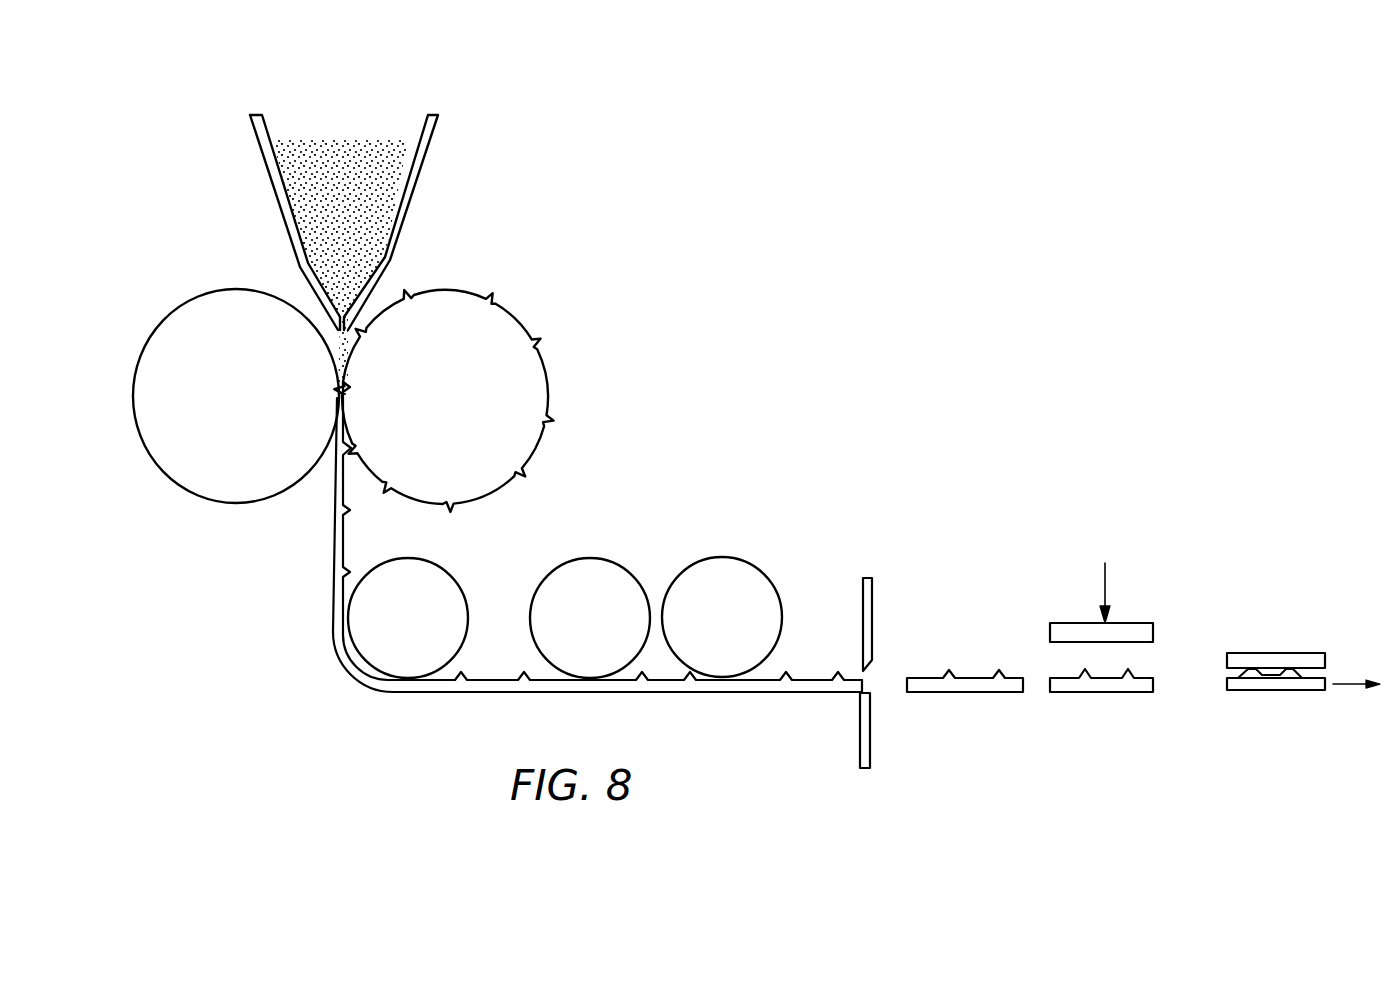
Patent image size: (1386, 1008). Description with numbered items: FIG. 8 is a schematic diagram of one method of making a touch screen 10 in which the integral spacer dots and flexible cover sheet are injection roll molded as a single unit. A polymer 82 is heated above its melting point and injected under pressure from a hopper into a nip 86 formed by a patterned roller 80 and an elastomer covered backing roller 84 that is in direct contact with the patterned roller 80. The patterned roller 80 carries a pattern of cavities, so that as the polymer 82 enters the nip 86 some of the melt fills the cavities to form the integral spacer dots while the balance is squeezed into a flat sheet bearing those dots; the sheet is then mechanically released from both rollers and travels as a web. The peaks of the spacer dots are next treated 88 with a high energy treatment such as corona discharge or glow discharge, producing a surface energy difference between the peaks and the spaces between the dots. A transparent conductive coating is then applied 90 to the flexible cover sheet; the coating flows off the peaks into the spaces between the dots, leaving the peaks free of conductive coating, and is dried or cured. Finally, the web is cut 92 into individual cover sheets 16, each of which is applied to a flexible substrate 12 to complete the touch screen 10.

The touch screen 10 is at (1276, 646).
The flexible substrate 12 is at (1152, 623).
The individual cover sheets 16 is at (1105, 692).
The patterned roller 80 is at (510, 322).
The polymer 82 is at (346, 150).
The elastomer covered backing roller 84 is at (203, 294).
The nip 86 is at (300, 300).
The high energy treatment 88 is at (588, 560).
The application of transparent conductive coating 90 is at (742, 560).
The cutting step 92 is at (876, 586).